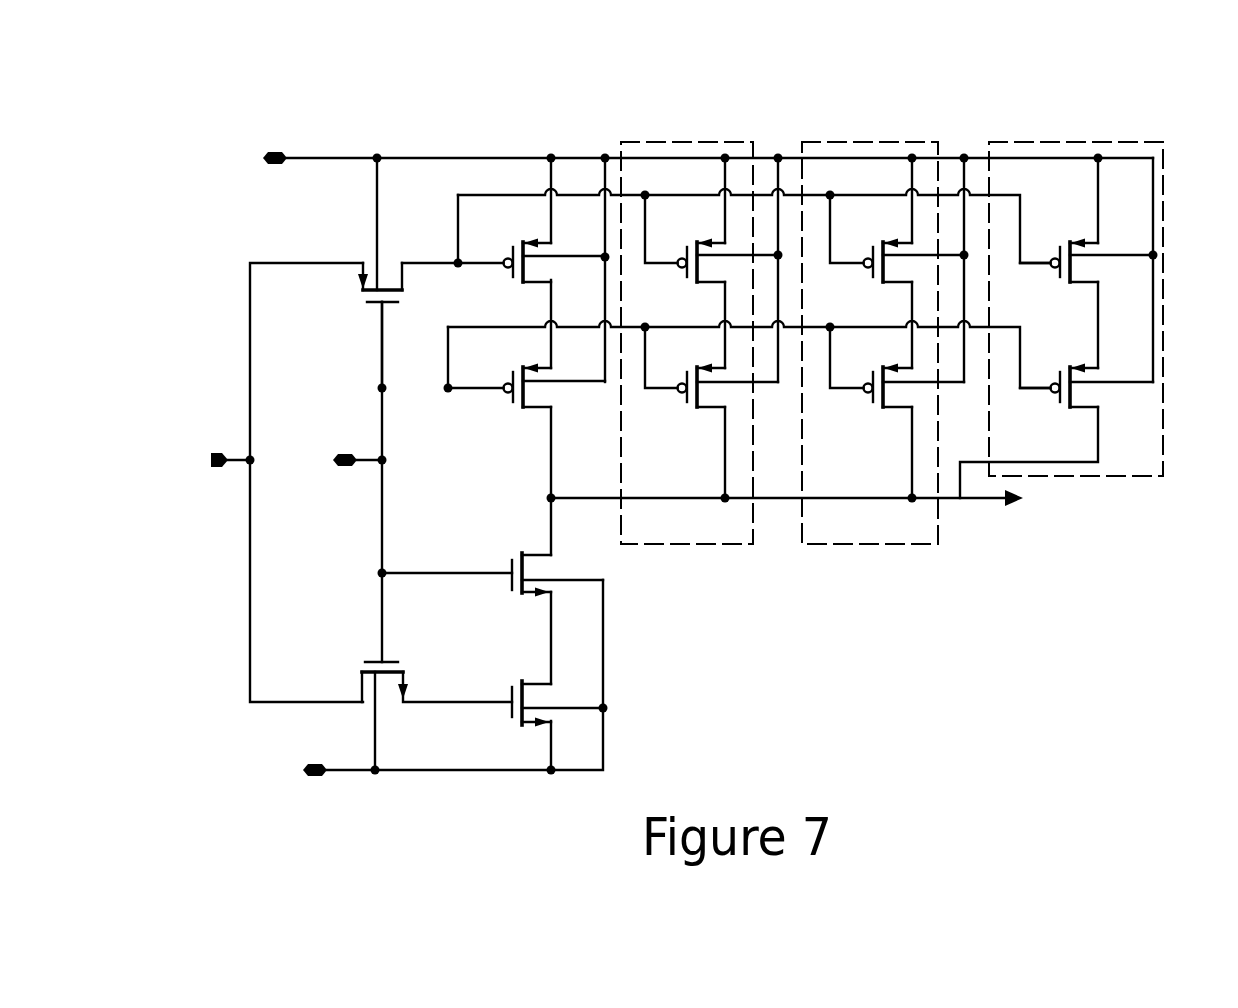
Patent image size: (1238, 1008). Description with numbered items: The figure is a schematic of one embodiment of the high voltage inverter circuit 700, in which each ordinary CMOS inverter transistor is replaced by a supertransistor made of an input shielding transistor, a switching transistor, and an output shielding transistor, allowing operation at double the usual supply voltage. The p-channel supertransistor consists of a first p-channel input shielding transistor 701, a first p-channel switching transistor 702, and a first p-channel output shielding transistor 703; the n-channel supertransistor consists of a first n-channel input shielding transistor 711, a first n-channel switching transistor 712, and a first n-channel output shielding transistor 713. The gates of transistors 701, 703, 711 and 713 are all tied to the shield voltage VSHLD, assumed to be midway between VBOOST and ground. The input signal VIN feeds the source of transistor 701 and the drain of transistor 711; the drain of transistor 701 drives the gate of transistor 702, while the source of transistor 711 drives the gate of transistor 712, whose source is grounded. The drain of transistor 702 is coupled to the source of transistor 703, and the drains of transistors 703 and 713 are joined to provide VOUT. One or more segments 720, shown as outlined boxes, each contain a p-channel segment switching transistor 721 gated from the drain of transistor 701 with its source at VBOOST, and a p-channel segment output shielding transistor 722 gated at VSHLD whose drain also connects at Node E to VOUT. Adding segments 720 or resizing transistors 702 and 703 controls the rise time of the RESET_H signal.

The high voltage inverter circuit 700 is at (1090, 52).
The first p-channel CMOS input shielding transistor 701 is at (372, 303).
The first p-channel CMOS switching transistor 702 is at (513, 278).
The first p-channel CMOS output shielding transistor 703 is at (513, 403).
The first n-channel CMOS input shielding transistor 711 is at (372, 662).
The first n-channel CMOS switching transistor 712 is at (512, 709).
The first n-channel CMOS output shielding transistor 713 is at (512, 582).
The segment 720 is at (663, 142).
The p-channel segment switching transistor 721 is at (687, 278).
The p-channel segment output shielding transistor 722 is at (687, 403).